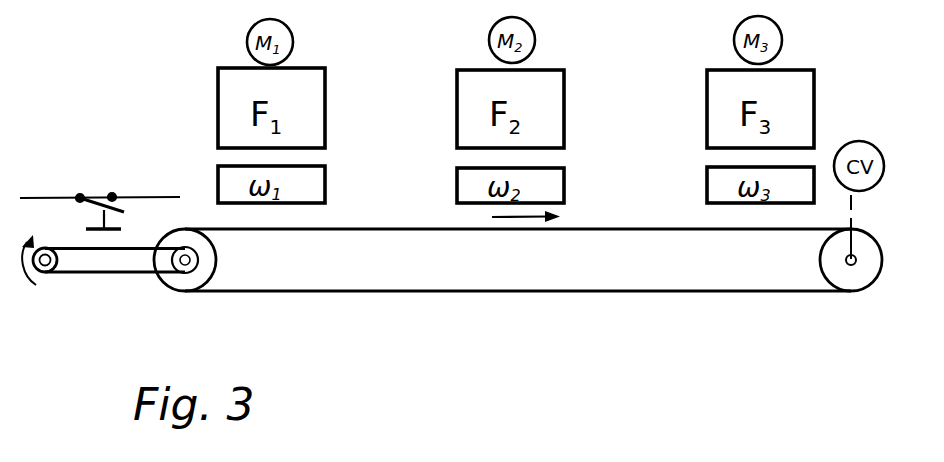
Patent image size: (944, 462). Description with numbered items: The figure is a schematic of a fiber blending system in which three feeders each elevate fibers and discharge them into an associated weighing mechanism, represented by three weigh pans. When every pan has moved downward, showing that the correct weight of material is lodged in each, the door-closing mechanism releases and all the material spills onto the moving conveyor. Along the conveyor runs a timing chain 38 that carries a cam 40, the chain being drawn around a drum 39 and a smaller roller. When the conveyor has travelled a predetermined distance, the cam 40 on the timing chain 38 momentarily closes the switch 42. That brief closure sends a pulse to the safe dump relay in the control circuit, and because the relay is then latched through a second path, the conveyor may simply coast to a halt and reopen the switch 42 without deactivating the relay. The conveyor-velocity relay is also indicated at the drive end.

The timing chain 38 is at (643, 291).
The drive drum 39 is at (155, 278).
The cam 40 is at (108, 305).
The switch 42 is at (101, 202).